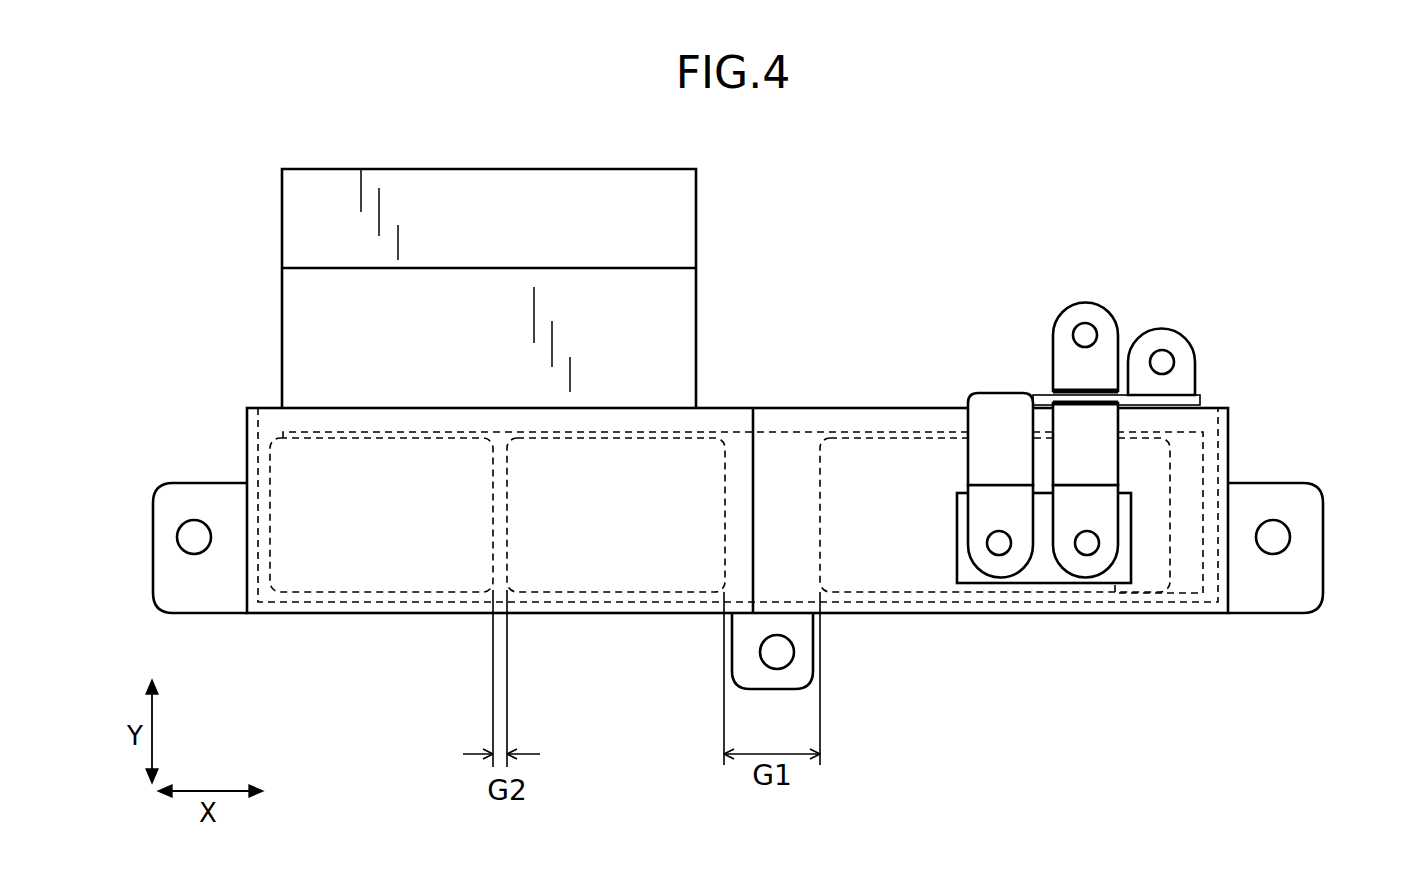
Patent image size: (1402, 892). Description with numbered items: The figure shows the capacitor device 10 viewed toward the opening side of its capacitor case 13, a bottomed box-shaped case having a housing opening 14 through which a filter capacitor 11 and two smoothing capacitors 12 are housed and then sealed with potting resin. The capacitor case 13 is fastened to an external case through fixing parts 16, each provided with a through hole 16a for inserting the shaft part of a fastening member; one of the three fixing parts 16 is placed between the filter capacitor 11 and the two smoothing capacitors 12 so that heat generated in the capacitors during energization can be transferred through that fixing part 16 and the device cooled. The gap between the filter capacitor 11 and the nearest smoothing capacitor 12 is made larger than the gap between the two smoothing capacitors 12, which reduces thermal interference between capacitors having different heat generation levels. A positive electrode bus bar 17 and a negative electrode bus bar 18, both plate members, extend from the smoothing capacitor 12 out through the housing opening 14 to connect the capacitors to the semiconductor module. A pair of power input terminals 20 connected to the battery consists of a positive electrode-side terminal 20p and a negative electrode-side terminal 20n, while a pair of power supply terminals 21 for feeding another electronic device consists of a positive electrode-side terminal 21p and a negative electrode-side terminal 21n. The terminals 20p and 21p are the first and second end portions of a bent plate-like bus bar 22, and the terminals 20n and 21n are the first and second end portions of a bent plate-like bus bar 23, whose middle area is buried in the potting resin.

The capacitor device 10 is at (950, 240).
The filter capacitor 11 is at (856, 436).
The smoothing capacitors 12 is at (345, 600).
The capacitor case 13 is at (706, 613).
The housing opening 14 is at (268, 417).
The fixing parts 16 is at (208, 483).
The through hole 16a is at (188, 537).
The positive electrode bus bar 17 is at (697, 335).
The negative electrode bus bar 18 is at (697, 228).
The power input terminals 20 is at (1135, 287).
The negative electrode-side terminal 20n is at (1083, 318).
The positive electrode-side terminal 20p is at (1170, 315).
The power supply terminals 21 is at (1053, 608).
The positive electrode-side terminal 21p is at (999, 560).
The negative electrode-side terminal 21n is at (1093, 578).
The bus bar 22 is at (967, 422).
The bus bar 23 is at (1120, 465).